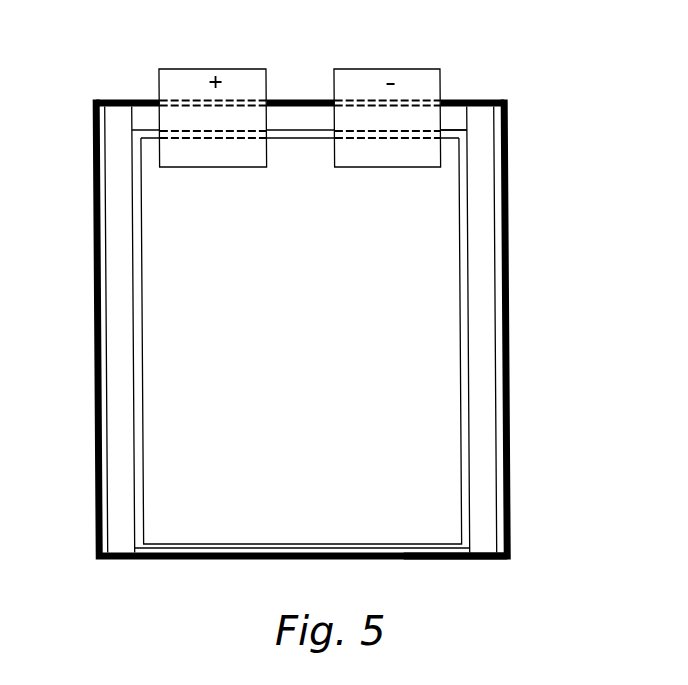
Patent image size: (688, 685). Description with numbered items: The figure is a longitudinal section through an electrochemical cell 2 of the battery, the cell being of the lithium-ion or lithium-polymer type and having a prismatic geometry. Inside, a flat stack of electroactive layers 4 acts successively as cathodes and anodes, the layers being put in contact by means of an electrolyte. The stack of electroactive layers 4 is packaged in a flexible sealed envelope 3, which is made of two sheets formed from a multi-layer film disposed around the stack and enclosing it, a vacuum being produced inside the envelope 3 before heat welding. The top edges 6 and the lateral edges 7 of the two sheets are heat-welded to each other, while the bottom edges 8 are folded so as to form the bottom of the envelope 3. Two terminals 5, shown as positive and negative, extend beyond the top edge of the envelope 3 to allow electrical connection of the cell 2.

The electrochemical cell 2 is at (507, 155).
The flexible sealed envelope 3 is at (480, 512).
The stack of electroactive layers 4 is at (450, 363).
The terminals 5 is at (180, 69).
The top edges 6 is at (453, 122).
The lateral edges 7 is at (121, 275).
The bottom edges 8 is at (443, 559).